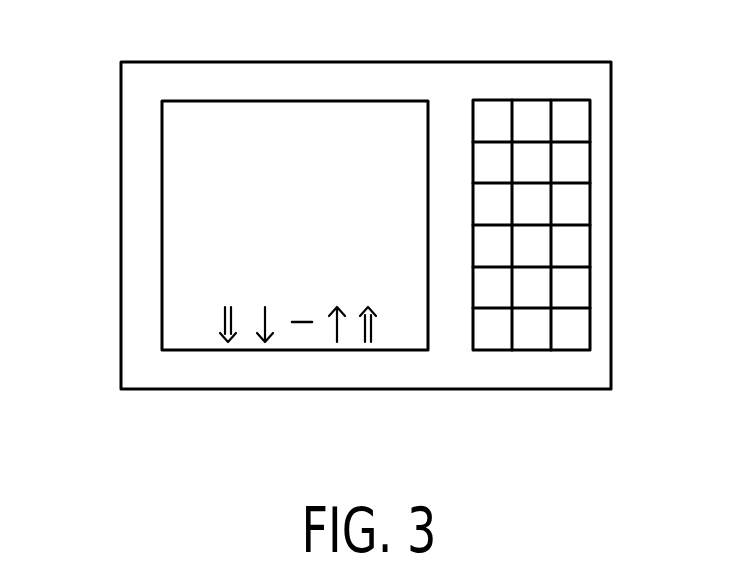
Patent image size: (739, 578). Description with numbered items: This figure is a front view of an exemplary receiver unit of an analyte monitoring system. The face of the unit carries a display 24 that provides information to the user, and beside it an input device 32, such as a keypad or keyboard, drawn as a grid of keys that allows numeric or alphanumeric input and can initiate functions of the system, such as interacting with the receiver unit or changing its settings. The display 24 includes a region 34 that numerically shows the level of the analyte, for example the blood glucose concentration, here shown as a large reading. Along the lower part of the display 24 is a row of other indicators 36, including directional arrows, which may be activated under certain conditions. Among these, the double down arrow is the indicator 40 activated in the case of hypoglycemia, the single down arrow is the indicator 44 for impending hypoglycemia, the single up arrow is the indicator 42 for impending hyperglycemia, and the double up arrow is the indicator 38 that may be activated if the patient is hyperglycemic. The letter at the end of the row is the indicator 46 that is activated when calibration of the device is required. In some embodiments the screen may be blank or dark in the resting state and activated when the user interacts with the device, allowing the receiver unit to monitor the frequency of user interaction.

The display 24 is at (210, 101).
The input device 32 is at (568, 100).
The region displaying the analyte level 34 is at (195, 187).
The indicators 36 is at (190, 322).
The hypoglycemia indicator 40 is at (227, 344).
The impending hypoglycemia indicator 44 is at (268, 344).
The impending hyperglycemia indicator 42 is at (339, 344).
The hyperglycemia indicator 38 is at (366, 344).
The calibration required indicator 46 is at (403, 344).